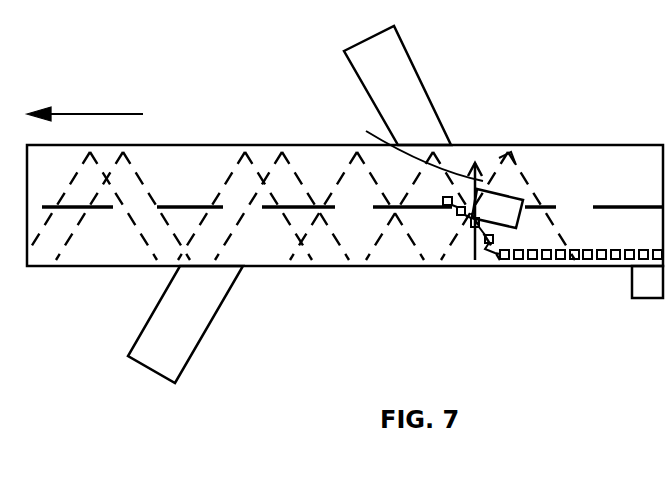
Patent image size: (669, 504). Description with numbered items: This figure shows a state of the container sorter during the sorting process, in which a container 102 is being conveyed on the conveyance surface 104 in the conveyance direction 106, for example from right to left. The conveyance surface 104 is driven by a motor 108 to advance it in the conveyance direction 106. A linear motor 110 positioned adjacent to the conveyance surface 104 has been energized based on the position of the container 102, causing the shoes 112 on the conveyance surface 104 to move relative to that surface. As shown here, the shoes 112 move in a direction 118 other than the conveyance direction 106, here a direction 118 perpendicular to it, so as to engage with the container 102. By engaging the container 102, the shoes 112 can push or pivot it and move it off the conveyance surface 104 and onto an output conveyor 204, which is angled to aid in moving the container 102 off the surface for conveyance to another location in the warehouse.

The container 102 is at (495, 189).
The conveyance surface 104 is at (607, 173).
The conveyance direction 106 is at (92, 112).
The motor 108 is at (648, 302).
The linear motor 110 is at (477, 266).
The shoe 112 is at (583, 268).
The direction 118 is at (403, 150).
The output conveyor 204 is at (412, 57).